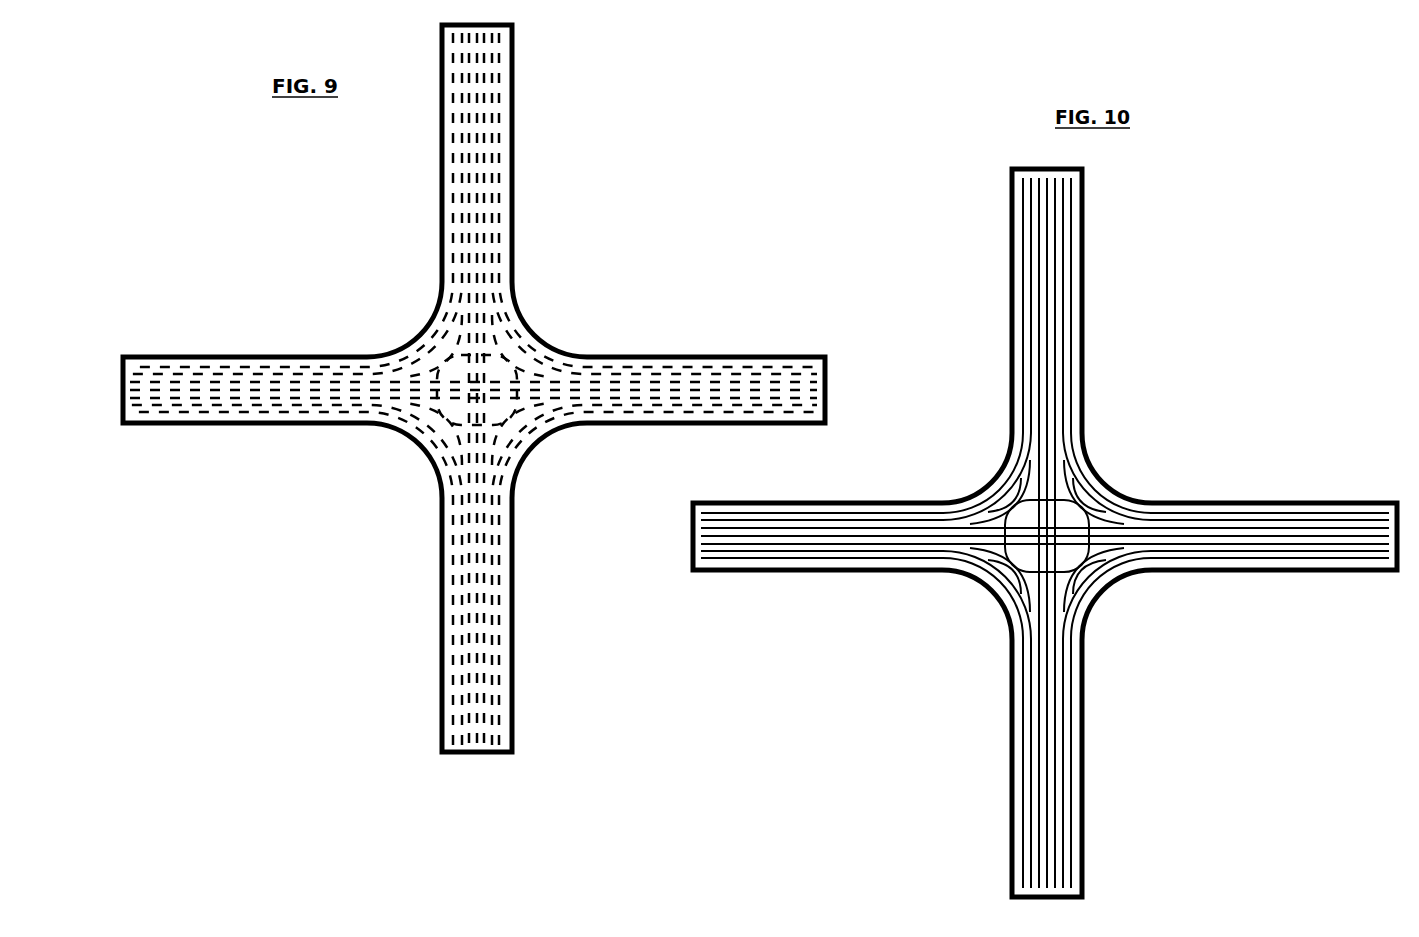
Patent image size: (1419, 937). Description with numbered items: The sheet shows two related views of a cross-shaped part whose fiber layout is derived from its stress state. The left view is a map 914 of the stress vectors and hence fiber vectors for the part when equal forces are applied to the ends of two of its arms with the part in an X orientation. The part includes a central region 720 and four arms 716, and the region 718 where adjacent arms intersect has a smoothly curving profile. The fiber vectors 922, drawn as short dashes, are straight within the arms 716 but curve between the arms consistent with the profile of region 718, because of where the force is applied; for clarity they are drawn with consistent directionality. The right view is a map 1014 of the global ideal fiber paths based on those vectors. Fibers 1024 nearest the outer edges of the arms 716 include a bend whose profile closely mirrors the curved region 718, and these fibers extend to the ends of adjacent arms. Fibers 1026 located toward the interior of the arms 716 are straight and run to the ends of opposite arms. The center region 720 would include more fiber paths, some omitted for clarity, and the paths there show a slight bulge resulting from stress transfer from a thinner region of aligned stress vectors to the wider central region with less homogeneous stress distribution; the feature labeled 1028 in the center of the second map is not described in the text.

In FIG. 9, the map 914 is at (291, 238).
In FIG. 9, the arms 716 is at (508, 148).
In FIG. 10, the arms 716 is at (1082, 292).
In FIG. 9, the region 718 is at (525, 333).
In FIG. 10, the region 718 is at (1110, 485).
In FIG. 9, the central region 720 is at (445, 410).
In FIG. 10, the central region 720 is at (1126, 553).
In FIG. 9, the fiber vectors 922 is at (483, 118).
In FIG. 10, the map 1014 is at (1231, 327).
In FIG. 10, the fibers 1026 is at (1052, 262).
In FIG. 10, the fibers 1024 is at (1085, 452).
In FIG. 10, the crossing streamlines 1028 is at (1100, 592).